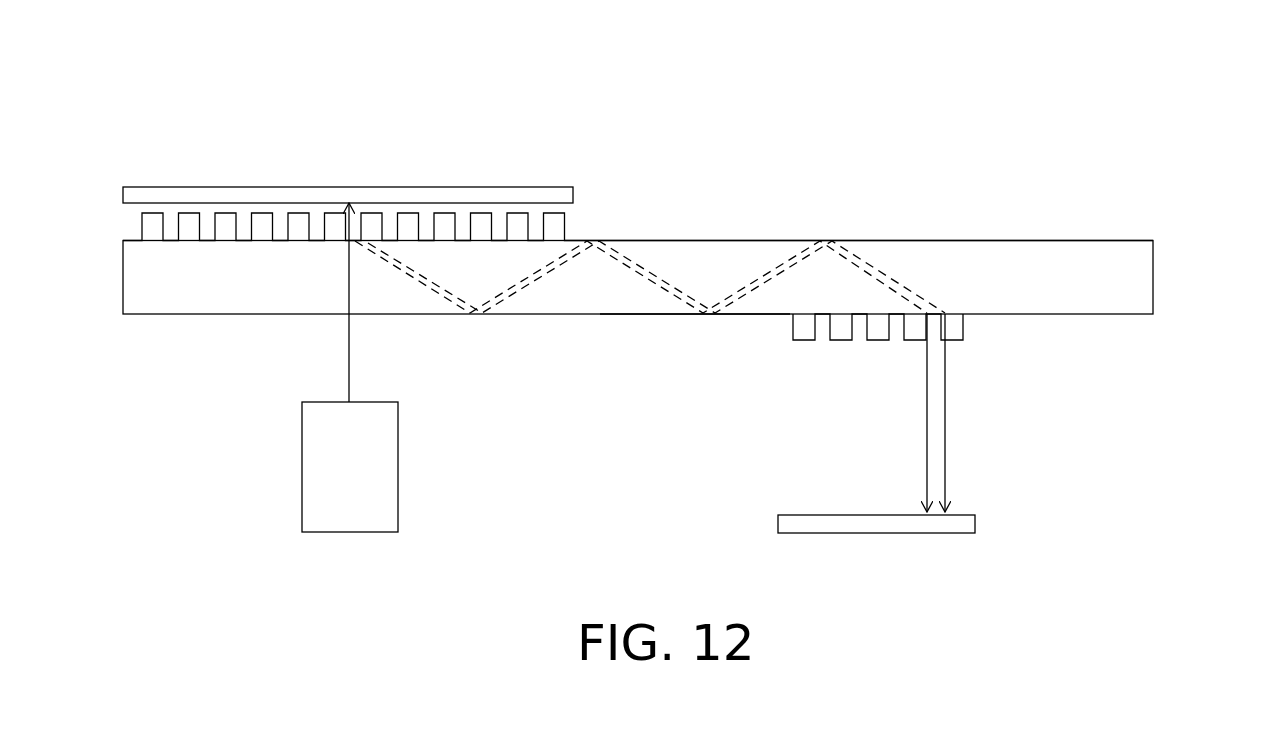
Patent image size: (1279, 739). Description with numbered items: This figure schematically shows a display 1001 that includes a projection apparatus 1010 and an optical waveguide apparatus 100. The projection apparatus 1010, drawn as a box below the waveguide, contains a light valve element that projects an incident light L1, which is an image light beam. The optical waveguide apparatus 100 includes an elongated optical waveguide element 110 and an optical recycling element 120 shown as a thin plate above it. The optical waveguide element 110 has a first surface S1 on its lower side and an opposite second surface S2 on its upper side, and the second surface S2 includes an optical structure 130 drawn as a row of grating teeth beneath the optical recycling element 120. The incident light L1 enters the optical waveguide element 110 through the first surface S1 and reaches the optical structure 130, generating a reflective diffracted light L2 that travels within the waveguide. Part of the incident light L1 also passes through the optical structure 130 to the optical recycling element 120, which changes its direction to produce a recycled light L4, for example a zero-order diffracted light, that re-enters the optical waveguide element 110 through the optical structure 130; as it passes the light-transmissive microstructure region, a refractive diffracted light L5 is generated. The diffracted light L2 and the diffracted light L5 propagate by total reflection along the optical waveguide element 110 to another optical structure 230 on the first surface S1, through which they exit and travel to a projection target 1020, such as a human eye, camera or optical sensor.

The optical waveguide apparatus 100 is at (1115, 171).
The optical waveguide element 110 is at (1133, 275).
The optical recycling element 120 is at (575, 193).
The optical structure 130 is at (110, 200).
The optical structure 230 is at (963, 326).
The projection apparatus 1010 is at (302, 464).
The projection target 1020 is at (958, 528).
The display 1001 is at (1278, 423).
The incident light L1 is at (333, 302).
The reflective diffracted light L2 is at (410, 282).
The recycled light L4 is at (357, 222).
The refractive diffracted light L5 is at (440, 280).
The first surface S1 is at (745, 315).
The second surface S2 is at (727, 239).